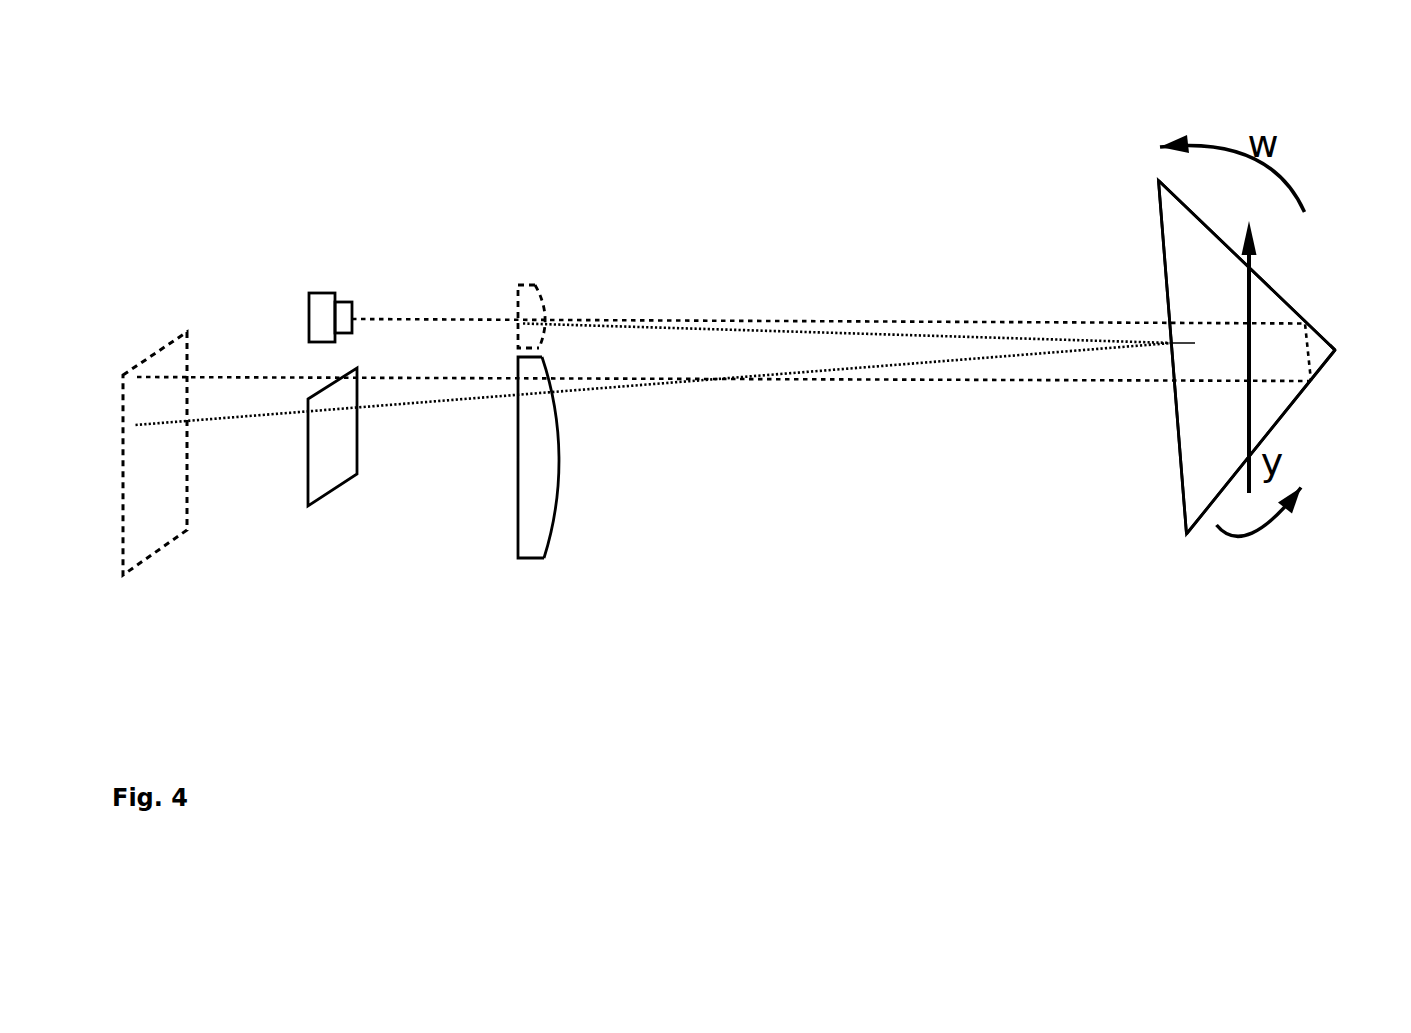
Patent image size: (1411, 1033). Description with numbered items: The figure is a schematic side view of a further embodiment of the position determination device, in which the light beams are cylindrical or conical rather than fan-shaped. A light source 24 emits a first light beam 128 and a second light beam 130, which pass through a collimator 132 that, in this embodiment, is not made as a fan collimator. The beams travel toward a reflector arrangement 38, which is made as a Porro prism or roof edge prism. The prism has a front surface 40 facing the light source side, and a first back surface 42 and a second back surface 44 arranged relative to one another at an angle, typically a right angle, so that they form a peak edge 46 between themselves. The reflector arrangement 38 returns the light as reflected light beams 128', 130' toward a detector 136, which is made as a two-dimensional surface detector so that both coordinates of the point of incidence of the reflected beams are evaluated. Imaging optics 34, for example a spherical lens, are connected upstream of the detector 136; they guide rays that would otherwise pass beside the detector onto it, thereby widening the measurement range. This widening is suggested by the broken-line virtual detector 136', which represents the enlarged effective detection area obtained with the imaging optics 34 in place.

The light source 24 is at (322, 302).
The imaging optics 34 is at (548, 493).
The reflector arrangement 38 is at (1148, 472).
The front surface 40 is at (1174, 421).
The first back surface 42 is at (1320, 330).
The second back surface 44 is at (1327, 359).
The peak edge 46 is at (1337, 351).
The light beam 128 is at (859, 227).
The reflected light beam 128' is at (654, 398).
The light beam 130 is at (831, 246).
The reflected light beam 130' is at (724, 455).
The collimator 132 is at (529, 289).
The detector 136 is at (391, 451).
The virtual detector 136' is at (155, 343).